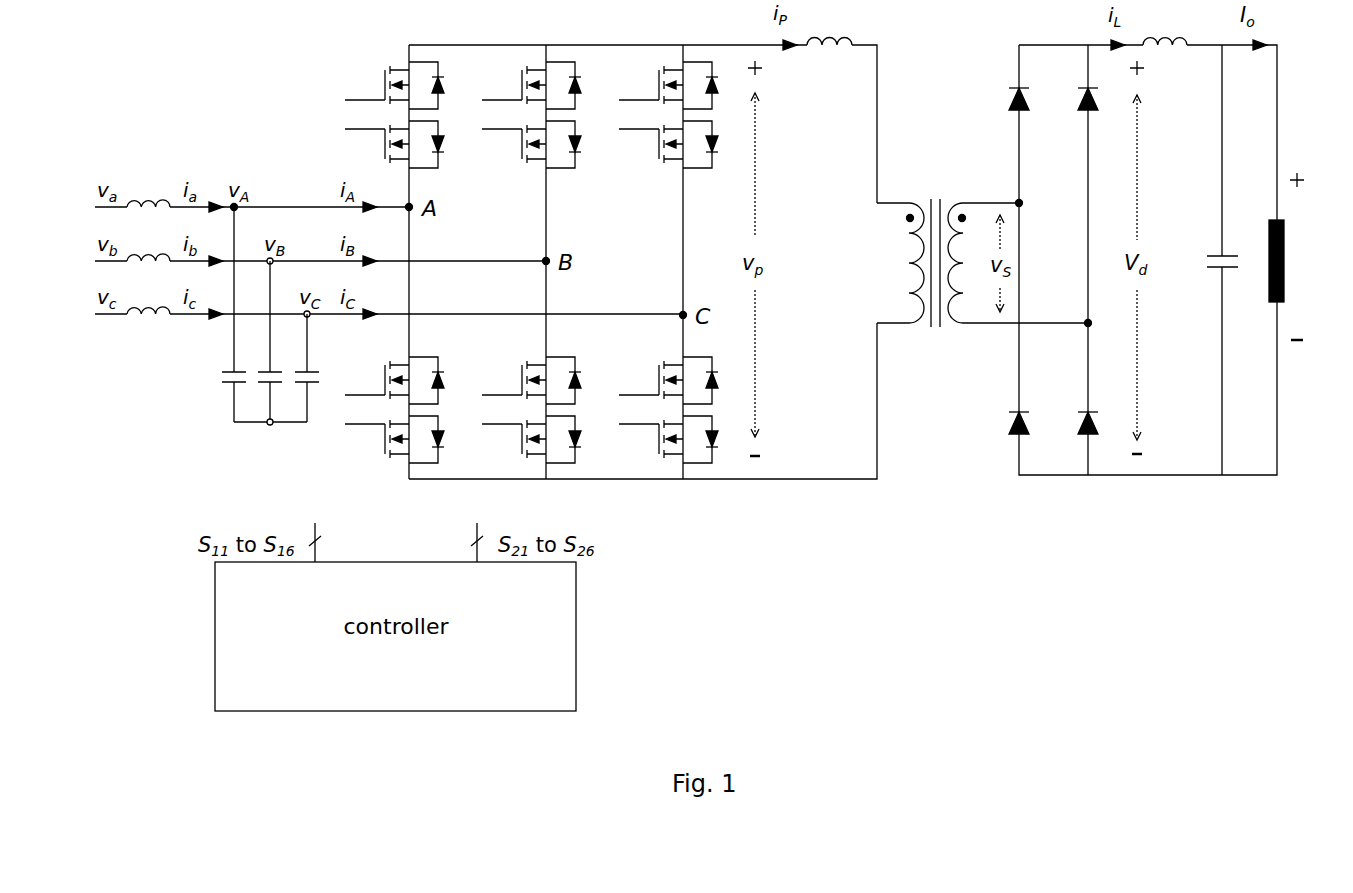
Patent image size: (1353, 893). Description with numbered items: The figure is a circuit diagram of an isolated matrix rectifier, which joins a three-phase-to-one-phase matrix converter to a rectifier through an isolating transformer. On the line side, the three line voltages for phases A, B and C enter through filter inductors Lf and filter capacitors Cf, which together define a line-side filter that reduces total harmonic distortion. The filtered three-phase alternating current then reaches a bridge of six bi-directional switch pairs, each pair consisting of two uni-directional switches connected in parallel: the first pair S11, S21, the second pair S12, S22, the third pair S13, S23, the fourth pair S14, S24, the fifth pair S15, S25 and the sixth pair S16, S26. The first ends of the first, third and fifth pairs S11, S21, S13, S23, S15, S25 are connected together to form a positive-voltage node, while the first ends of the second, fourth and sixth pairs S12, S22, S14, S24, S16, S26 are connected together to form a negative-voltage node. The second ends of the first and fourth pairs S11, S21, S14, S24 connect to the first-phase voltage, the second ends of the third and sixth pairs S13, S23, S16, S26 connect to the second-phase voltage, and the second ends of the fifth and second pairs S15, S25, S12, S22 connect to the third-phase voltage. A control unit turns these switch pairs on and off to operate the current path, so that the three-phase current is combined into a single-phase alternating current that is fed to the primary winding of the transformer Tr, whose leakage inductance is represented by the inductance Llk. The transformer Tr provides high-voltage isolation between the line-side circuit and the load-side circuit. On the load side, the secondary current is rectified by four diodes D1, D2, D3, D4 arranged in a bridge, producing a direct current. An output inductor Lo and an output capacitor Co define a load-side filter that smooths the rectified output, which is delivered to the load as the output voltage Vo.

The filter inductors Lf is at (148, 235).
The filter capacitors Cf is at (254, 316).
The uni-directional switch of the first bi-directional switch pair S11 is at (394, 145).
The uni-directional switch of the second bi-directional switch pair S12 is at (668, 440).
The uni-directional switch of the third bi-directional switch pair S13 is at (531, 145).
The uni-directional switch of the fourth bi-directional switch pair S14 is at (394, 440).
The uni-directional switch of the fifth bi-directional switch pair S15 is at (668, 145).
The uni-directional switch of the sixth bi-directional switch pair S16 is at (531, 440).
The uni-directional switch of the first bi-directional switch pair S21 is at (394, 85).
The uni-directional switch of the second bi-directional switch pair S22 is at (668, 380).
The uni-directional switch of the third bi-directional switch pair S23 is at (531, 85).
The uni-directional switch of the fourth bi-directional switch pair S24 is at (394, 380).
The uni-directional switch of the fifth bi-directional switch pair S25 is at (668, 85).
The uni-directional switch of the sixth bi-directional switch pair S26 is at (531, 380).
The leakage inductance Llk is at (829, 23).
The transformer Tr is at (982, 265).
The diode D1 is at (1006, 86).
The diode D2 is at (1006, 407).
The diode D3 is at (1075, 86).
The diode D4 is at (1075, 407).
The output inductor Lo is at (1165, 24).
The output capacitor Co is at (1206, 264).
The output voltage Vo is at (1289, 256).